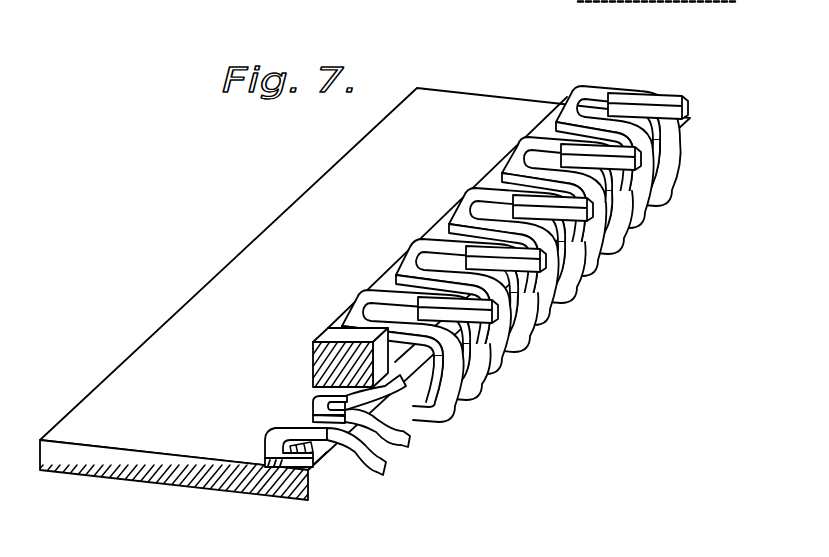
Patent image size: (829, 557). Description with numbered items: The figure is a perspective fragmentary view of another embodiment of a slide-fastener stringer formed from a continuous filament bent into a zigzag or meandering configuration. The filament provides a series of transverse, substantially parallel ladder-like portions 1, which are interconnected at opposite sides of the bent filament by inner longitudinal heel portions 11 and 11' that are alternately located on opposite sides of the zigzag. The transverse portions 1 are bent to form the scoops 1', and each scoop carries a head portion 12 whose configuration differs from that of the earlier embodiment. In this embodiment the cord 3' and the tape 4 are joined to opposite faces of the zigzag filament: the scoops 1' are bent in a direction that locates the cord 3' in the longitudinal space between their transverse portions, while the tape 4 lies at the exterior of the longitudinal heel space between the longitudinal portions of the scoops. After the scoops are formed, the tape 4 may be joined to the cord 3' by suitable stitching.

The transverse ladder-like portion 1 is at (497, 294).
The scoop 1' is at (667, 169).
The inner longitudinal heel portion 11 is at (511, 221).
The inner longitudinal heel portion 11' is at (323, 425).
The head portion 12 is at (488, 360).
The cord 3' is at (346, 338).
The tape 4 is at (128, 433).